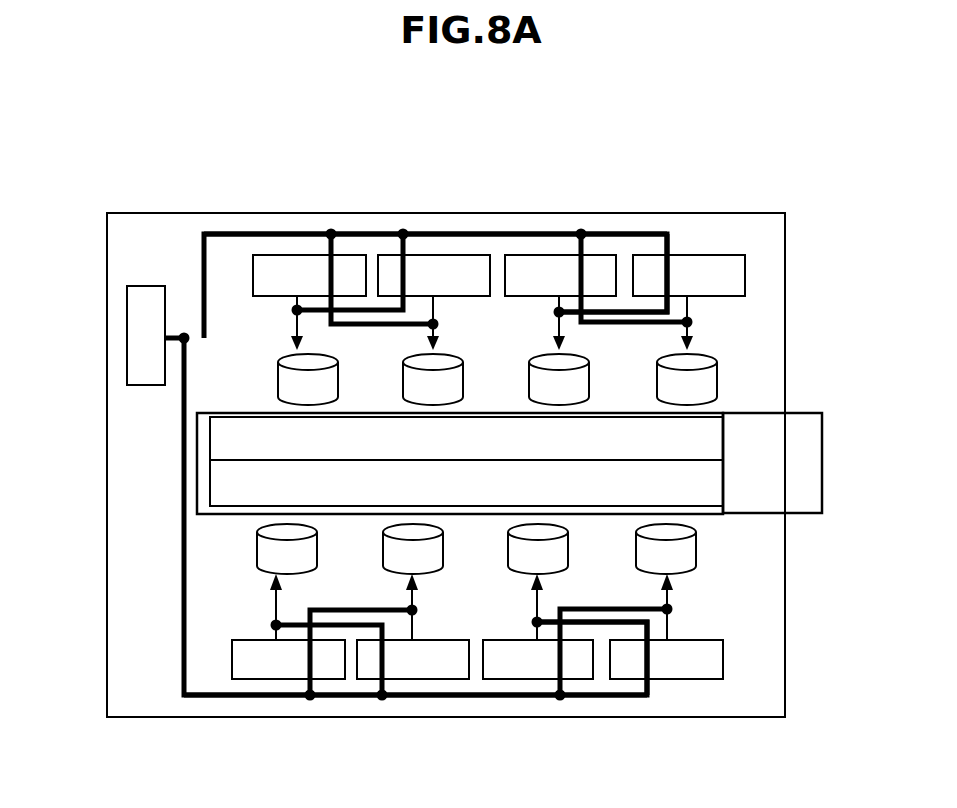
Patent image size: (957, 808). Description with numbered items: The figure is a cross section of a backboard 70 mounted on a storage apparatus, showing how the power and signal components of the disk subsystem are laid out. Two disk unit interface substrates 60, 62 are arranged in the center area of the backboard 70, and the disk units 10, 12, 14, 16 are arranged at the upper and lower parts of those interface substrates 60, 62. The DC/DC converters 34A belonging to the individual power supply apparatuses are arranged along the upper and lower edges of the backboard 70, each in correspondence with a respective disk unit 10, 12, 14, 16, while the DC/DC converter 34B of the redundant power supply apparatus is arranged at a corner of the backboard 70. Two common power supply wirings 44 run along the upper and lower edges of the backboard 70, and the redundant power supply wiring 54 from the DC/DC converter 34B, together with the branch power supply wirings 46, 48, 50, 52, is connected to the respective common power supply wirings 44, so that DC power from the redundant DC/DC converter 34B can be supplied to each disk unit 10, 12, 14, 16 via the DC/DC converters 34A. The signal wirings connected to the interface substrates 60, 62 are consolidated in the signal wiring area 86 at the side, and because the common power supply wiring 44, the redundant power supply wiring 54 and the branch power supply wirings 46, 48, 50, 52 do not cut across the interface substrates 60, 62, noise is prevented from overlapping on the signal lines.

The disk unit 10 is at (338, 378).
The disk unit 12 is at (463, 378).
The disk unit 14 is at (589, 378).
The disk unit 16 is at (717, 378).
The DC/DC converter 34A is at (266, 255).
The DC/DC converter 34B is at (140, 326).
The common power supply wiring 44 is at (455, 234).
The branch power supply wiring 46 is at (336, 246).
The branch power supply wiring 48 is at (410, 247).
The branch power supply wiring 50 is at (568, 246).
The branch power supply wiring 52 is at (668, 248).
The redundant power supply wiring 54 is at (204, 254).
The disk unit interface substrate 60 is at (717, 433).
The disk unit interface substrate 62 is at (714, 484).
The backboard 70 is at (785, 298).
The signal wiring area 86 is at (822, 460).